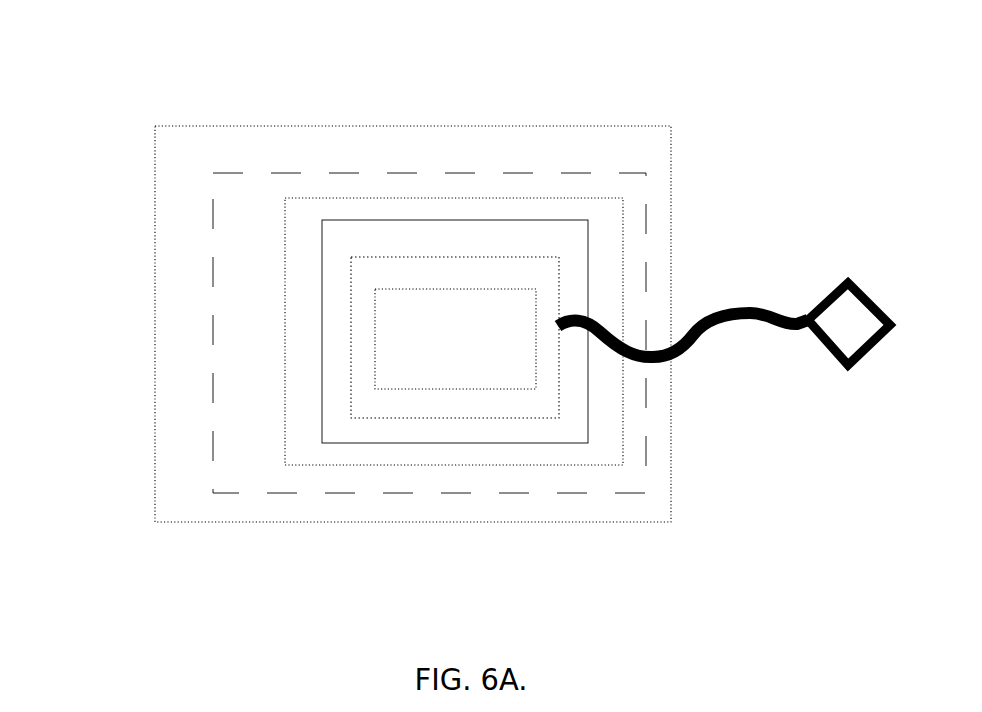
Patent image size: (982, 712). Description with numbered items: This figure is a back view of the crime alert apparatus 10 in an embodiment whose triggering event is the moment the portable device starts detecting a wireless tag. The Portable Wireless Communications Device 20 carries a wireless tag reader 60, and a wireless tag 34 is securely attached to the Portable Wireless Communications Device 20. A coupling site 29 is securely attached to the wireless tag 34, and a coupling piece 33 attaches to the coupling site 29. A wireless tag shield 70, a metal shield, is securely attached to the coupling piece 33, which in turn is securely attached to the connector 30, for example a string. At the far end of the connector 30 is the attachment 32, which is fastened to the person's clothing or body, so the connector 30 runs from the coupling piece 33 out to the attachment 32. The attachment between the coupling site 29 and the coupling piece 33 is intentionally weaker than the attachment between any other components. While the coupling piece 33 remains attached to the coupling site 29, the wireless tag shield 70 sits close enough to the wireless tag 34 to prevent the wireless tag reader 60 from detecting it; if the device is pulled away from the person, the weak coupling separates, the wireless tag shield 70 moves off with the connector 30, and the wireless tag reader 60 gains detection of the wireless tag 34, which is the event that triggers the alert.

The crime alert apparatus 10 is at (599, 86).
The Portable Wireless Communications Device 20 is at (157, 250).
The wireless tag reader 60 is at (237, 228).
The wireless tag 34 is at (300, 273).
The coupling site 29 is at (335, 342).
The coupling piece 33 is at (365, 363).
The wireless tag shield 70 is at (458, 363).
The connector 30 is at (759, 320).
The attachment for clothing 32 is at (840, 320).